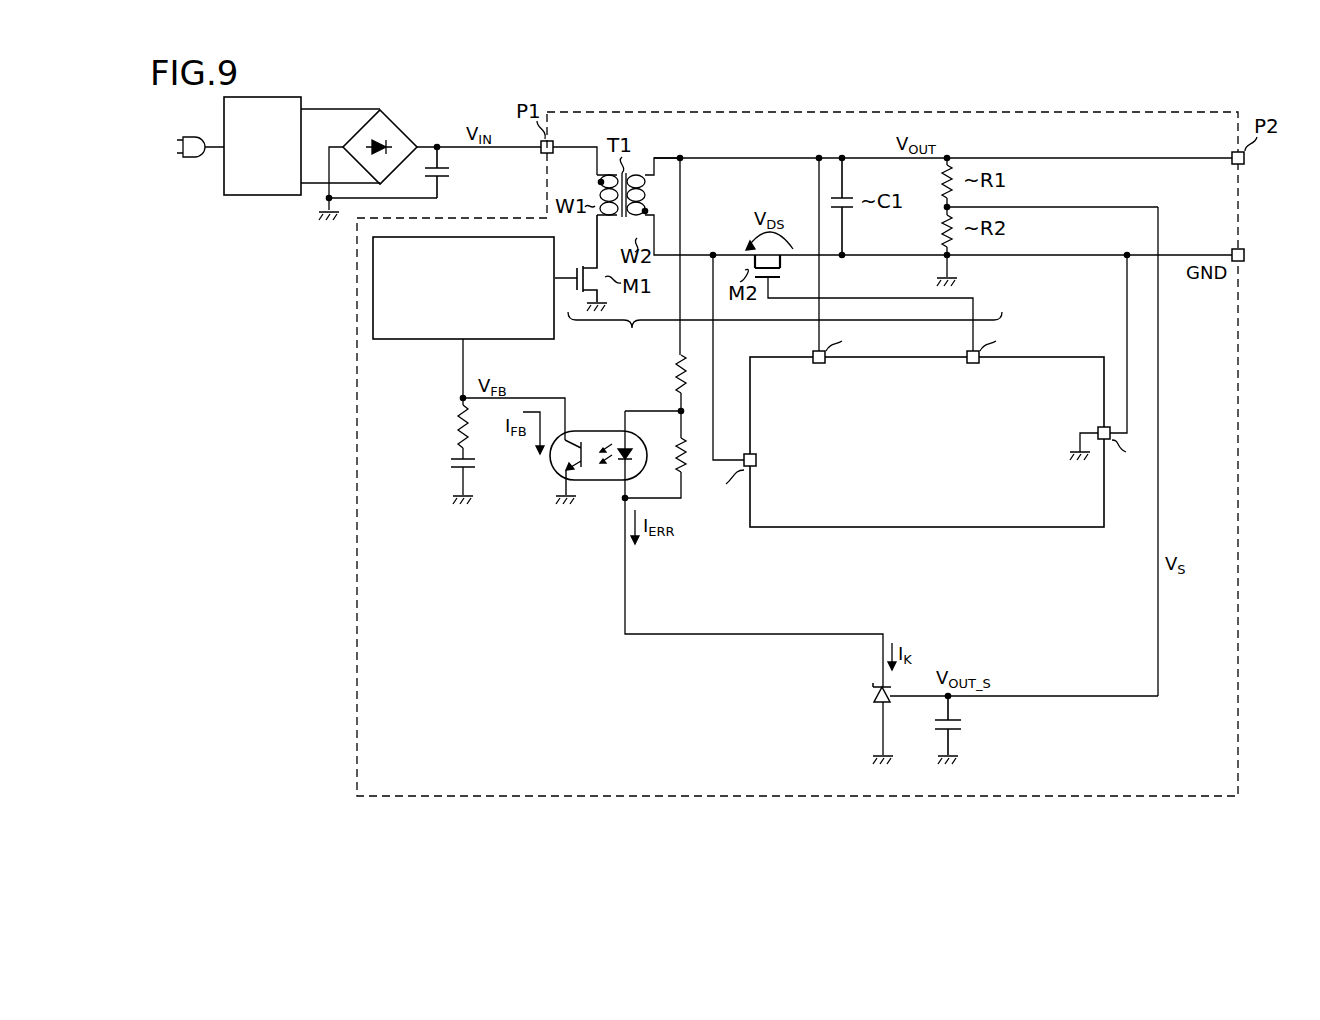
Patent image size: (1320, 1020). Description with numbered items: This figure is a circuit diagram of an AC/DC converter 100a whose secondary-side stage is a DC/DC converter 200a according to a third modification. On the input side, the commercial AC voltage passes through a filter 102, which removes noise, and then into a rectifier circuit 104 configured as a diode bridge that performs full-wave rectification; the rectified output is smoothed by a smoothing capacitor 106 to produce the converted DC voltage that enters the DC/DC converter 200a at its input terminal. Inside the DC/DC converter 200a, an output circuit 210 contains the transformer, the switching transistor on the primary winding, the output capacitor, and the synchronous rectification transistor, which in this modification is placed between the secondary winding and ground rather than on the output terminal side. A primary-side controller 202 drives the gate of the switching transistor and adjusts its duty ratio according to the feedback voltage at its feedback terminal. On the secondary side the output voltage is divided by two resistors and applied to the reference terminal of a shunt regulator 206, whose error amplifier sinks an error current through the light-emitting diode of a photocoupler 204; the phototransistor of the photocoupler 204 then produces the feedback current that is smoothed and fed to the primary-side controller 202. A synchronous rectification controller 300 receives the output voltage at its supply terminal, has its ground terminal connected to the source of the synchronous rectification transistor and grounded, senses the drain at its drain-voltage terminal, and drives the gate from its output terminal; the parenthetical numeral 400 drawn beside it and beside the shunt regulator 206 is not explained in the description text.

The AC/DC converter 100a is at (279, 757).
The filter 102 is at (263, 196).
The rectifier circuit 104 is at (409, 133).
The smoothing capacitor 106 is at (465, 172).
The DC/DC converter 200a is at (933, 112).
The primary-side controller 202 is at (405, 341).
The photocoupler 204 is at (596, 428).
The shunt regulator 206 is at (863, 697).
The output circuit 210 is at (785, 334).
The synchronous rectification controller 300 is at (963, 530).
The synchronous rectification controller (alternative embodiment) 400 is at (921, 643).